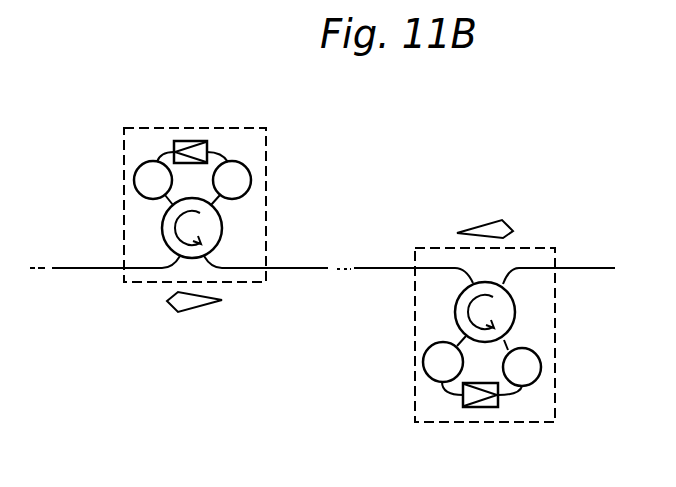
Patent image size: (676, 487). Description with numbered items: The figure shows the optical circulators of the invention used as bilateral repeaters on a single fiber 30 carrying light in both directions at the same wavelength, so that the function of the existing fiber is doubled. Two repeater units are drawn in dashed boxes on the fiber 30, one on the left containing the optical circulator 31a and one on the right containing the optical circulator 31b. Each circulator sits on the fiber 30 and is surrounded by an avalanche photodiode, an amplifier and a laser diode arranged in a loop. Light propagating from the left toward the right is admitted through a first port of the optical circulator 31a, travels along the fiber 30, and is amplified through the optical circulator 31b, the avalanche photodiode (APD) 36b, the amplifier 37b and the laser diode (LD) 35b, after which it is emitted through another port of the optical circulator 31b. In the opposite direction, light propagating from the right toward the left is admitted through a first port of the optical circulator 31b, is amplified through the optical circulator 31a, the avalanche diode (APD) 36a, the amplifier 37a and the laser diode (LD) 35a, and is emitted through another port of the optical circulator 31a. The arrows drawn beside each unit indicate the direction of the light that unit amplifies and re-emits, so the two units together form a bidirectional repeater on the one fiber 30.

The fiber 30 is at (362, 270).
The optical circulator 31a is at (222, 226).
The optical circulator 31b is at (515, 310).
The laser diode (LD) 35a is at (134, 180).
The laser diode (LD) 35b is at (541, 368).
The avalanche diode (APD) 36a is at (251, 180).
The avalanche photodiode (APD) 36b is at (423, 365).
The amplifier 37a is at (200, 141).
The amplifier 37b is at (481, 407).